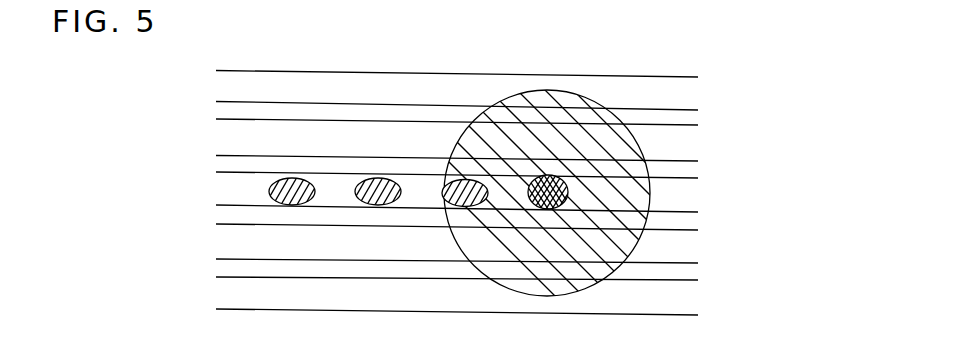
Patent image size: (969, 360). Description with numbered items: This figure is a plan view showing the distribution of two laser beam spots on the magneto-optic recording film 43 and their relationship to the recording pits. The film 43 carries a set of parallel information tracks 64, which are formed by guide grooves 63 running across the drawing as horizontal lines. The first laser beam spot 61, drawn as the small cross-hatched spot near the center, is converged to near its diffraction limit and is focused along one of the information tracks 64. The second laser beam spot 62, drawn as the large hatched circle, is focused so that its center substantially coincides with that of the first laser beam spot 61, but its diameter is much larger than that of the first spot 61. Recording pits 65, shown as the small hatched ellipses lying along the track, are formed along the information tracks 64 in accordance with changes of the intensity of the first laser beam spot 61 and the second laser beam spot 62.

The magneto-optic recording film 43 is at (287, 70).
The first laser beam spot 61 is at (541, 208).
The second laser beam spot 62 is at (526, 90).
The guide groove 63 is at (645, 272).
The information tracks 64 is at (219, 93).
The recording pits 65 is at (287, 205).